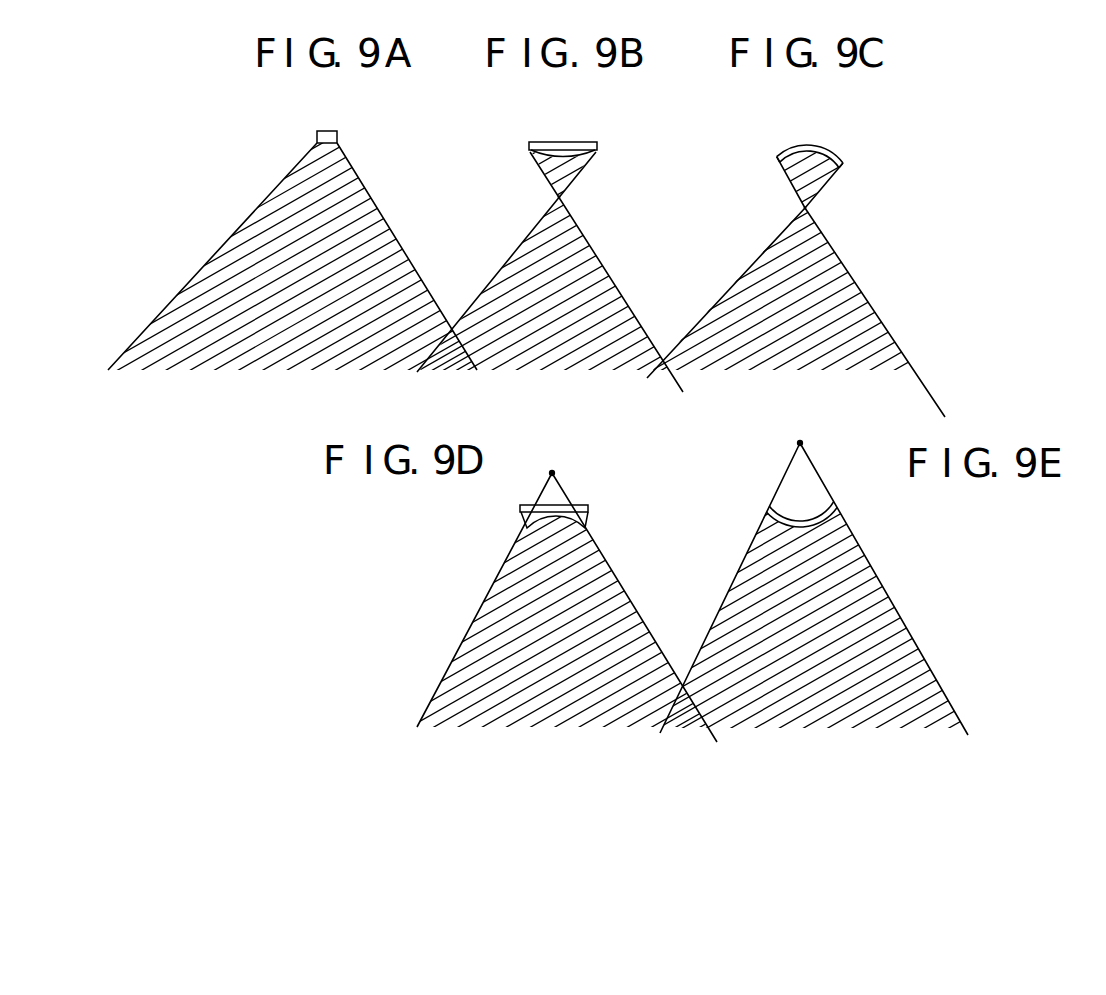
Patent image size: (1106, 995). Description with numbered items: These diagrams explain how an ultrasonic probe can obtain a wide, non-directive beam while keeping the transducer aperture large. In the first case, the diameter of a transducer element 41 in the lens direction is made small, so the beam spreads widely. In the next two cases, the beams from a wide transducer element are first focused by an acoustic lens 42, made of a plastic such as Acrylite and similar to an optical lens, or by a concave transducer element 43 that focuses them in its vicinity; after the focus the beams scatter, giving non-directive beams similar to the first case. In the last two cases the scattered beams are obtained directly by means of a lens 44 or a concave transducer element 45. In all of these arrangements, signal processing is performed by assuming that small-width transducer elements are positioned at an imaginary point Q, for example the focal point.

In FIG. 9A, the transducer element 41 is at (331, 131).
In FIG. 9B, the transducer element 41 is at (567, 141).
In FIG. 9D, the transducer element 41 is at (557, 505).
In FIG. 9B, the acoustic lens 42 is at (584, 153).
In FIG. 9C, the concave transducer element 43 is at (843, 158).
In FIG. 9D, the lens 44 is at (586, 524).
In FIG. 9E, the concave transducer element 45 is at (838, 508).
In FIG. 9B, the imaginary point Q is at (562, 197).
In FIG. 9C, the imaginary point Q is at (808, 207).
In FIG. 9D, the imaginary point Q is at (549, 473).
In FIG. 9E, the imaginary point Q is at (798, 444).